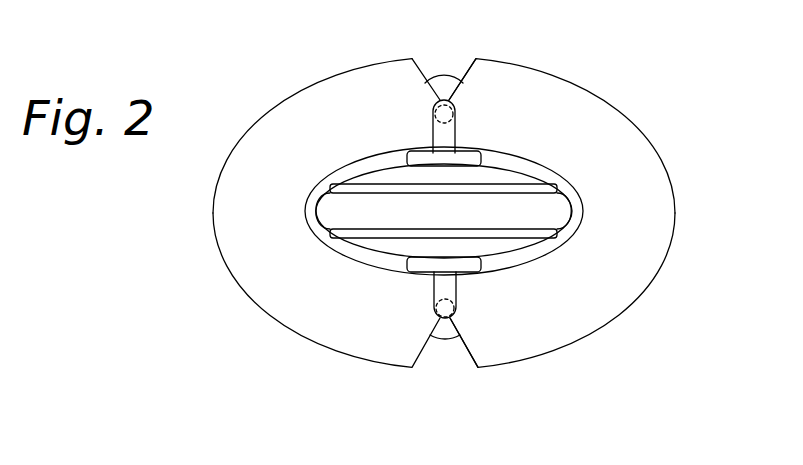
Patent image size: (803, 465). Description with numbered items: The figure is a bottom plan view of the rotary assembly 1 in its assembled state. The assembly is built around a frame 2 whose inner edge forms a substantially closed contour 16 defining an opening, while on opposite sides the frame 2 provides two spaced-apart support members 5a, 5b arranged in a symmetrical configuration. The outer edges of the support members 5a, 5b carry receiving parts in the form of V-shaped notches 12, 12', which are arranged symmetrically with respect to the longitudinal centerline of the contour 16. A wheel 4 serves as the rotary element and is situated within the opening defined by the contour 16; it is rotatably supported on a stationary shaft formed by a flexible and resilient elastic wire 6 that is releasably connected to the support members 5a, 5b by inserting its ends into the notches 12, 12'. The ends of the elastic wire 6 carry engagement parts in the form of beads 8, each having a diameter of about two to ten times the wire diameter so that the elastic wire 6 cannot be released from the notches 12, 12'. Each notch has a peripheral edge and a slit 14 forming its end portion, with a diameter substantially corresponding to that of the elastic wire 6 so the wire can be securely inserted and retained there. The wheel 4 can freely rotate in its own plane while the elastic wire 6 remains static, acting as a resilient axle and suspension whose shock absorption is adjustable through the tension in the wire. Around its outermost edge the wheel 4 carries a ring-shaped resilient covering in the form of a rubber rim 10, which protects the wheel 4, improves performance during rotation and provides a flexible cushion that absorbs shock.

The rotary assembly 1 is at (203, 282).
The frame 2 is at (637, 240).
The wheel 4 is at (378, 245).
The support member 5a is at (557, 310).
The support member 5b is at (578, 100).
The elastic wire 6 is at (437, 98).
The bead 8 is at (443, 82).
The rubber rim 10 is at (548, 210).
The notch 12 is at (469, 364).
The notch 12' is at (482, 58).
The slit 14 is at (434, 340).
The contour 16 is at (499, 158).